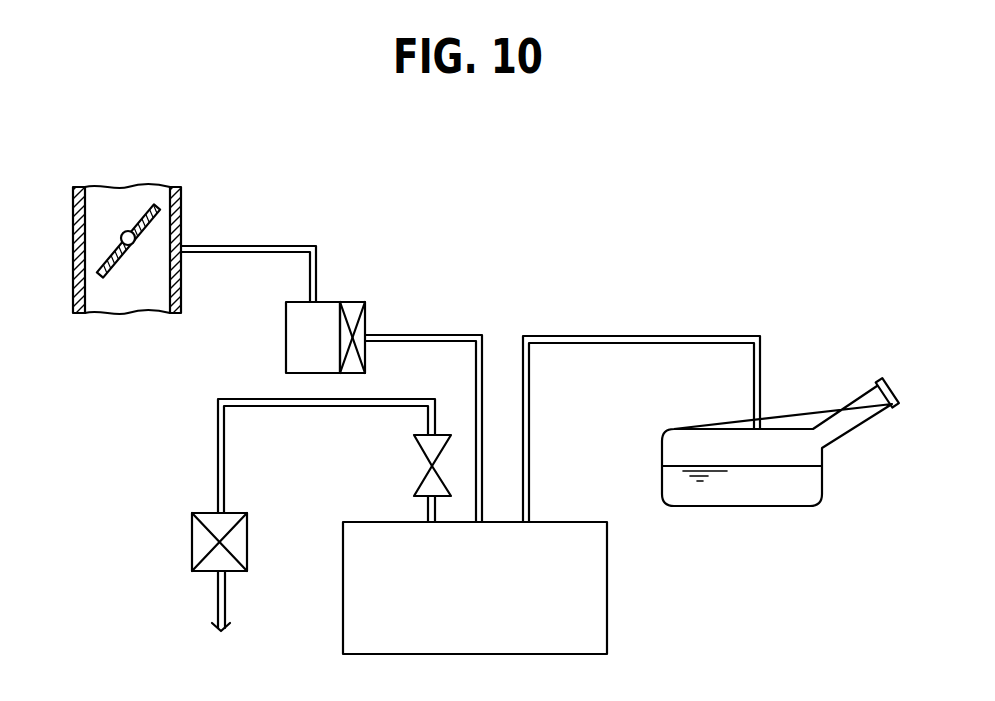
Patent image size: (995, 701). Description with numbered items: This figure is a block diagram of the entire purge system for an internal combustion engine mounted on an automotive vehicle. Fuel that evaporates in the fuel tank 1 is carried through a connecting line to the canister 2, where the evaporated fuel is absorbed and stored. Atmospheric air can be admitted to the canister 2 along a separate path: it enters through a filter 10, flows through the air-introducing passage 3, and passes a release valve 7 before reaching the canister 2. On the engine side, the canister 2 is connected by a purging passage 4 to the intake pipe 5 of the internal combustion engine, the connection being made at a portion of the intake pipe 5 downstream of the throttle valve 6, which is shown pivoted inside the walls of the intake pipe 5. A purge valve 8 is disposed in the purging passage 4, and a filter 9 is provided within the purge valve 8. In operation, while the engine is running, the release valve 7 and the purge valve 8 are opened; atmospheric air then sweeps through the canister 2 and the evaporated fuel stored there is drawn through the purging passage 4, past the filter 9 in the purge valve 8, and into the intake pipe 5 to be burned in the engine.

The fuel tank 1 is at (757, 508).
The canister 2 is at (607, 590).
The air-introducing passage 3 is at (218, 452).
The purging passage 4 is at (431, 333).
The intake pipe 5 is at (79, 213).
The throttle valve 6 is at (100, 254).
The release valve 7 is at (418, 456).
The purge valve 8 is at (286, 336).
The filter 9 is at (352, 302).
The filter 10 is at (196, 542).